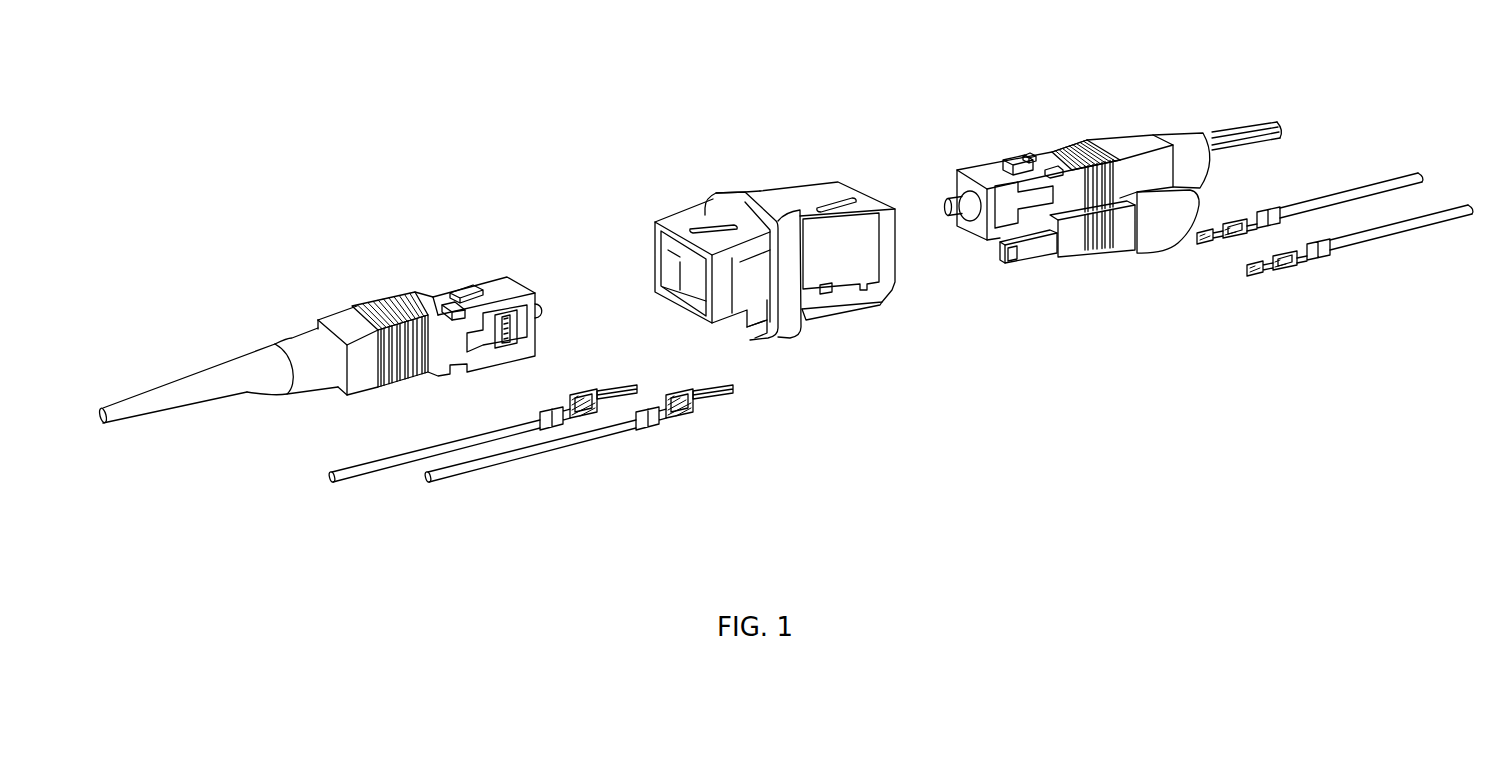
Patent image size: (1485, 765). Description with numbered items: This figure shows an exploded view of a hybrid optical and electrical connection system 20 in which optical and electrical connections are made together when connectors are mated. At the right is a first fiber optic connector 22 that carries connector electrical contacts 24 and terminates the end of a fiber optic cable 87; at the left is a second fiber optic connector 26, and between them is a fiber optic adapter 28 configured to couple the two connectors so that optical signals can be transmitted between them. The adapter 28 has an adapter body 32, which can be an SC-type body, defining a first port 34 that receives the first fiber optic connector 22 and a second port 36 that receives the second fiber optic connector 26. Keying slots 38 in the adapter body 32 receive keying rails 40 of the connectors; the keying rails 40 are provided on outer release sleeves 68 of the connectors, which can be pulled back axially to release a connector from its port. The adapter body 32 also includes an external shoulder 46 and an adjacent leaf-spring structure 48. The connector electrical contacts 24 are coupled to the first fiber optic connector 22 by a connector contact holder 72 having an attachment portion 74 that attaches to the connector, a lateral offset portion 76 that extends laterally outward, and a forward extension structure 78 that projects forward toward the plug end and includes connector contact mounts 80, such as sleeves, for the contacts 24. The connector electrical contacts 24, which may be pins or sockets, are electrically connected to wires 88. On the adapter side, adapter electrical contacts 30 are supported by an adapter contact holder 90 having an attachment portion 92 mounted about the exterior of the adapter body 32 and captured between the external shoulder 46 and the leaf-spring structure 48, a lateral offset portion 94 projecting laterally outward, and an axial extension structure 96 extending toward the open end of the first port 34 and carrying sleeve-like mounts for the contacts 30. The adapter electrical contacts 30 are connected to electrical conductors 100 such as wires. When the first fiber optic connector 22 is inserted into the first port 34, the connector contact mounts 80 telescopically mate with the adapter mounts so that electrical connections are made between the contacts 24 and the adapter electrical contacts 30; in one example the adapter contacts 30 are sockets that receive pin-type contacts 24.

The hybrid optical and electrical connection system 20 is at (257, 88).
The first fiber optic connector 22 is at (1078, 133).
The connector electrical contacts 24 is at (1224, 241).
The second fiber optic connector 26 is at (355, 294).
The fiber optic adapter 28 is at (789, 181).
The adapter electrical contacts 30 is at (612, 385).
The adapter body 32 is at (827, 182).
The first port 34 is at (898, 248).
The second port 36 is at (670, 258).
The keying slots 38 is at (700, 230).
The keying rails 40 is at (466, 290).
The external shoulder 46 is at (833, 268).
The leaf-spring structure 48 is at (758, 278).
The outer release sleeves 68 is at (396, 298).
The connector contact holder 72 is at (1162, 266).
The attachment portion 74 is at (1142, 143).
The lateral offset portion 76 is at (1207, 200).
The forward extension structure 78 is at (1075, 247).
The connector contact mounts 80 is at (1028, 252).
The cable 87 is at (1255, 127).
The wires 88 is at (1392, 180).
The adapter contact holder 90 is at (717, 177).
The attachment portion 92 is at (737, 197).
The lateral offset portion 94 is at (768, 328).
The axial extension structure 96 is at (820, 310).
The electrical conductors 100 is at (360, 465).